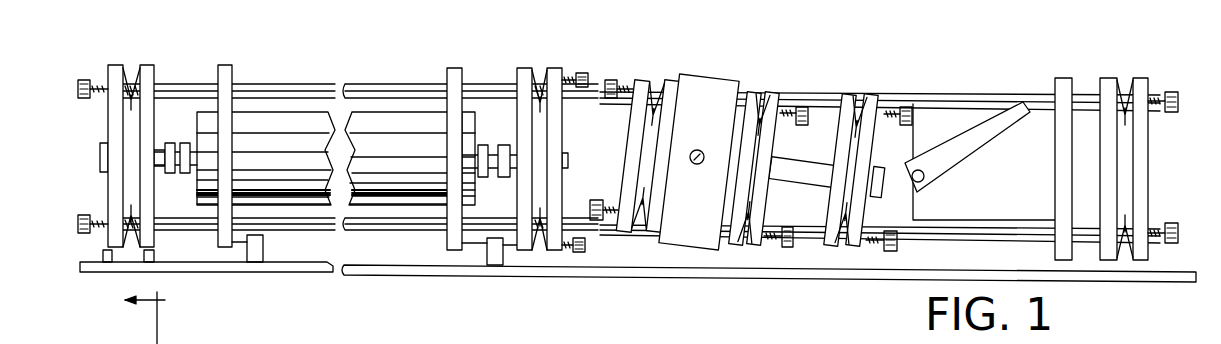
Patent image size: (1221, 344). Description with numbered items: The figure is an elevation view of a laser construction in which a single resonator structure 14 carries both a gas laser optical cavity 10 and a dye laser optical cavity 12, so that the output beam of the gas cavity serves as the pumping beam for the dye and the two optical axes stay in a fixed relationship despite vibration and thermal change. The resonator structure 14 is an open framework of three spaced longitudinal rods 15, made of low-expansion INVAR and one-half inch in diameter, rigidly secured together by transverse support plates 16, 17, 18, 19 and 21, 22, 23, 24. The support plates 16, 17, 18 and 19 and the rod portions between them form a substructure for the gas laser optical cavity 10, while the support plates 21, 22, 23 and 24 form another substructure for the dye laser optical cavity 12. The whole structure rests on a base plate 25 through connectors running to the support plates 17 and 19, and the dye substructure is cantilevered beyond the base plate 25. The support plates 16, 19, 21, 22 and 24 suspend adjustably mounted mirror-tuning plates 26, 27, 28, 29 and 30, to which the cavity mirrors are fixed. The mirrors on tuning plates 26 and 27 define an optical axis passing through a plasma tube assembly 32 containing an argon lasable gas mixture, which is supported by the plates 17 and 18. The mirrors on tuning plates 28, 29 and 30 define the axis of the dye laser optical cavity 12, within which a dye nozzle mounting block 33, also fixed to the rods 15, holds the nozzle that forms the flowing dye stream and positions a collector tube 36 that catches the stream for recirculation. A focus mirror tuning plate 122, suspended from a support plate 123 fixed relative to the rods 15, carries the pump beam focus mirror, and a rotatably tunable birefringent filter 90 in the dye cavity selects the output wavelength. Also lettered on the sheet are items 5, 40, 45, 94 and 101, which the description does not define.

The section line 5 is at (115, 343).
The gas laser optical cavity 10 is at (400, 90).
The dye laser optical cavity 12 is at (848, 88).
The resonator structure 14 is at (655, 283).
The rods 15 is at (255, 84).
The support plate 16 is at (148, 65).
The support plate 17 is at (226, 65).
The support plate 18 is at (455, 68).
The support plate 19 is at (525, 68).
The support plate 21 is at (667, 80).
The support plate 22 is at (752, 92).
The support plate 23 is at (1062, 78).
The support plate 24 is at (1108, 78).
The base plate 25 is at (135, 272).
The mirror-tuning plate 26 is at (113, 65).
The mirror-tuning plate 27 is at (553, 68).
The mirror-tuning plate 28 is at (650, 80).
The mirror-tuning plate 29 is at (775, 92).
The mirror-tuning plate 30 is at (1150, 92).
The plasma tube assembly 32 is at (368, 112).
The dye nozzle mounting block 33 is at (699, 162).
The collector tube 36 is at (705, 152).
The assembly 40 is at (345, 343).
The member 45 is at (168, 343).
The birefringent filter 90 is at (965, 162).
The member 94 is at (255, 343).
The member 101 is at (612, 343).
The focus mirror tuning plate 122 is at (878, 94).
The support plate 123 is at (876, 62).